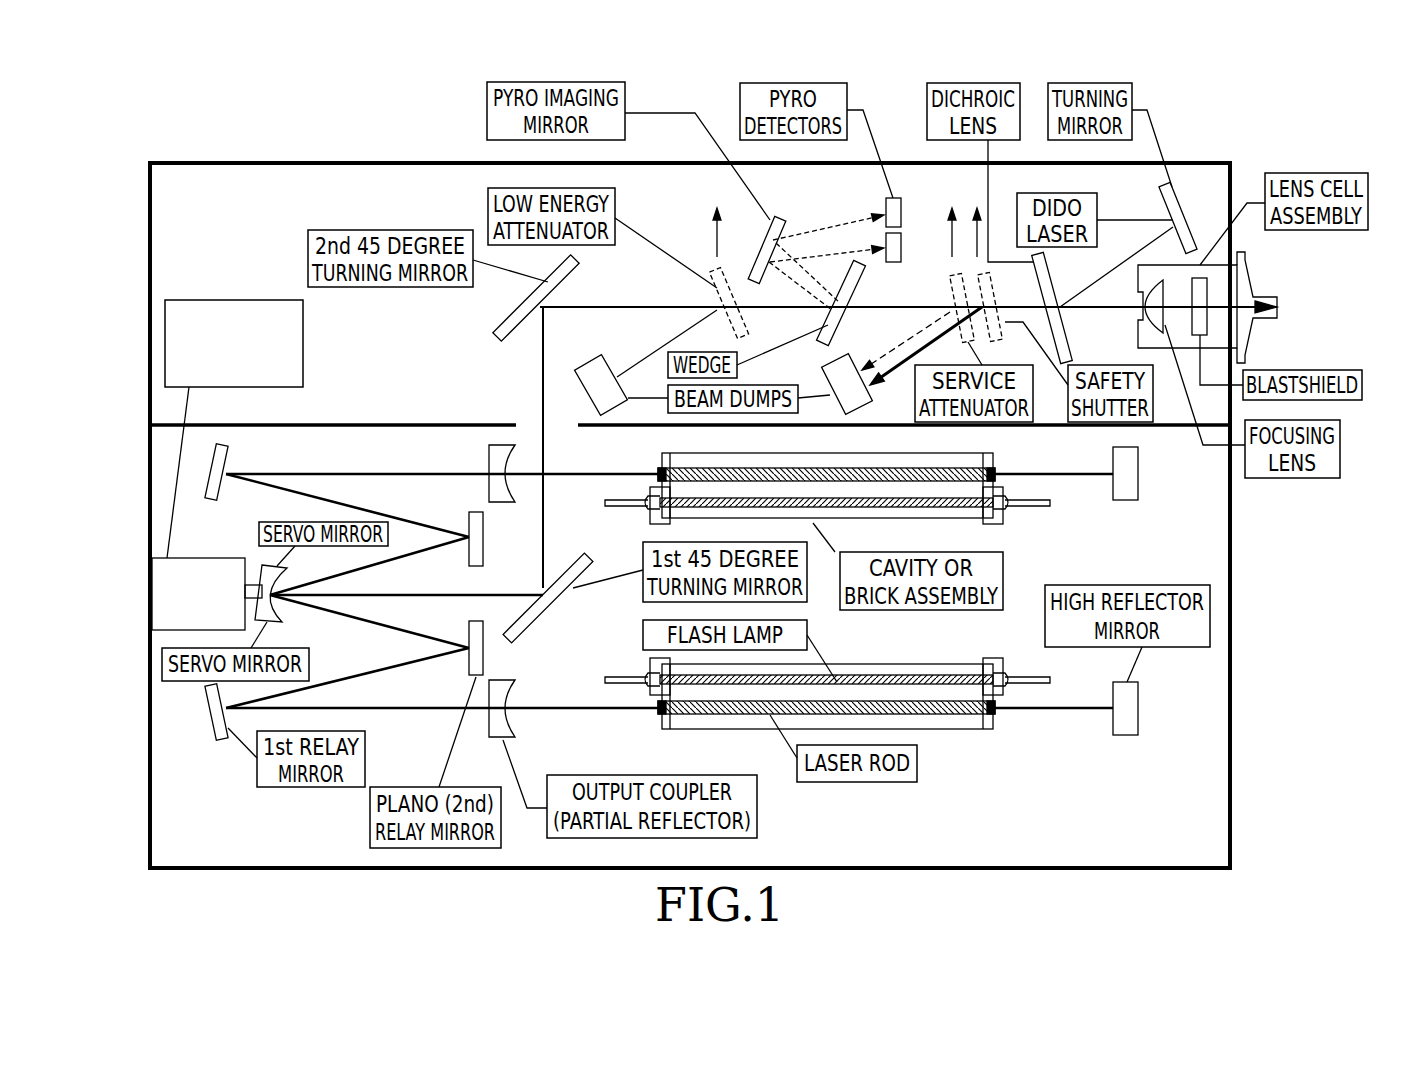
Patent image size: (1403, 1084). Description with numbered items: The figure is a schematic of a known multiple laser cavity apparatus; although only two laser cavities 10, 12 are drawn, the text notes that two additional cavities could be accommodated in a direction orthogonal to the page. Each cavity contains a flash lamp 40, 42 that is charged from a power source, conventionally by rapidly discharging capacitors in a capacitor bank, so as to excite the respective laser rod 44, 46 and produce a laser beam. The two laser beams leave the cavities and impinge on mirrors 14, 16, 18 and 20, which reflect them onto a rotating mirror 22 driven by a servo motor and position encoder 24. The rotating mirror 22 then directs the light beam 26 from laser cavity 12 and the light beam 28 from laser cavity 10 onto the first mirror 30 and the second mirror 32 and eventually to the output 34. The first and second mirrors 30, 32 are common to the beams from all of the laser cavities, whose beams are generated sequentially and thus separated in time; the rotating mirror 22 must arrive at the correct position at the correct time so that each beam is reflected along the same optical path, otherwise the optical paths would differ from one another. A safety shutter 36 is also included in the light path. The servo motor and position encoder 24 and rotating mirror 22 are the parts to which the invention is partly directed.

The laser cavity 10 is at (822, 532).
The laser cavity 12 is at (828, 681).
The mirror 14 is at (207, 490).
The mirror 16 is at (483, 545).
The mirror 18 is at (210, 724).
The mirror 20 is at (469, 667).
The rotating mirror 22 is at (273, 625).
The servo motor and position encoder 24 is at (228, 300).
The light beam 26 is at (580, 707).
The light beam 28 is at (602, 472).
The first mirror 30 is at (567, 555).
The second mirror 32 is at (494, 320).
The output 34 is at (1245, 278).
The safety shutter 36 is at (990, 282).
The flash lamp 40 is at (938, 508).
The flash lamp 42 is at (890, 678).
The laser rod 44 is at (995, 715).
The laser rod 46 is at (920, 468).